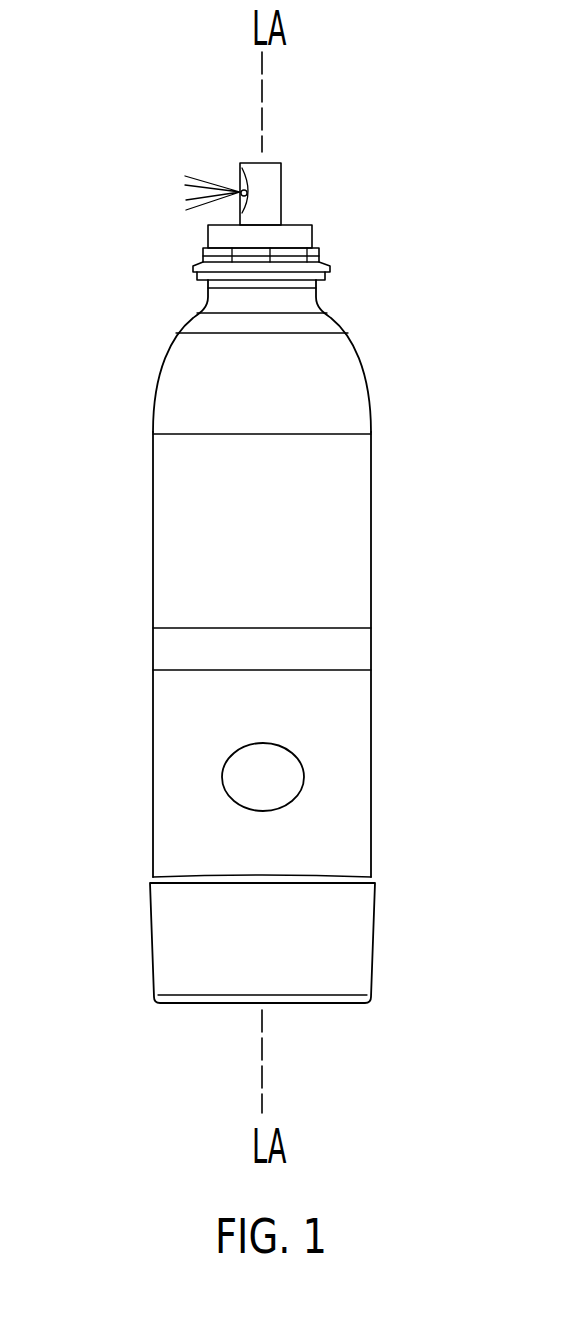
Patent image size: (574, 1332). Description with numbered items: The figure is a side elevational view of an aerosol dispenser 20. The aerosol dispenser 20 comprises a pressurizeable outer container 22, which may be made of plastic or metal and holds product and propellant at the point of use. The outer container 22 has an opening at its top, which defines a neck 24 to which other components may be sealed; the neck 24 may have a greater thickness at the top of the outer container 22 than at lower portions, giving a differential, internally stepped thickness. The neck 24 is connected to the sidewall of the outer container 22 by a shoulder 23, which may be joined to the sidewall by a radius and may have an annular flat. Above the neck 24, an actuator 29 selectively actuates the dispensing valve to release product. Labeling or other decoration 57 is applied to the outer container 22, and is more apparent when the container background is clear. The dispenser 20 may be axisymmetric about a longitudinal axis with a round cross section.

The aerosol dispenser 20 is at (244, 583).
The outer container 22 is at (163, 741).
The shoulder 23 is at (355, 345).
The neck 24 is at (176, 246).
The actuator 29 is at (265, 212).
The decoration 57 is at (272, 663).